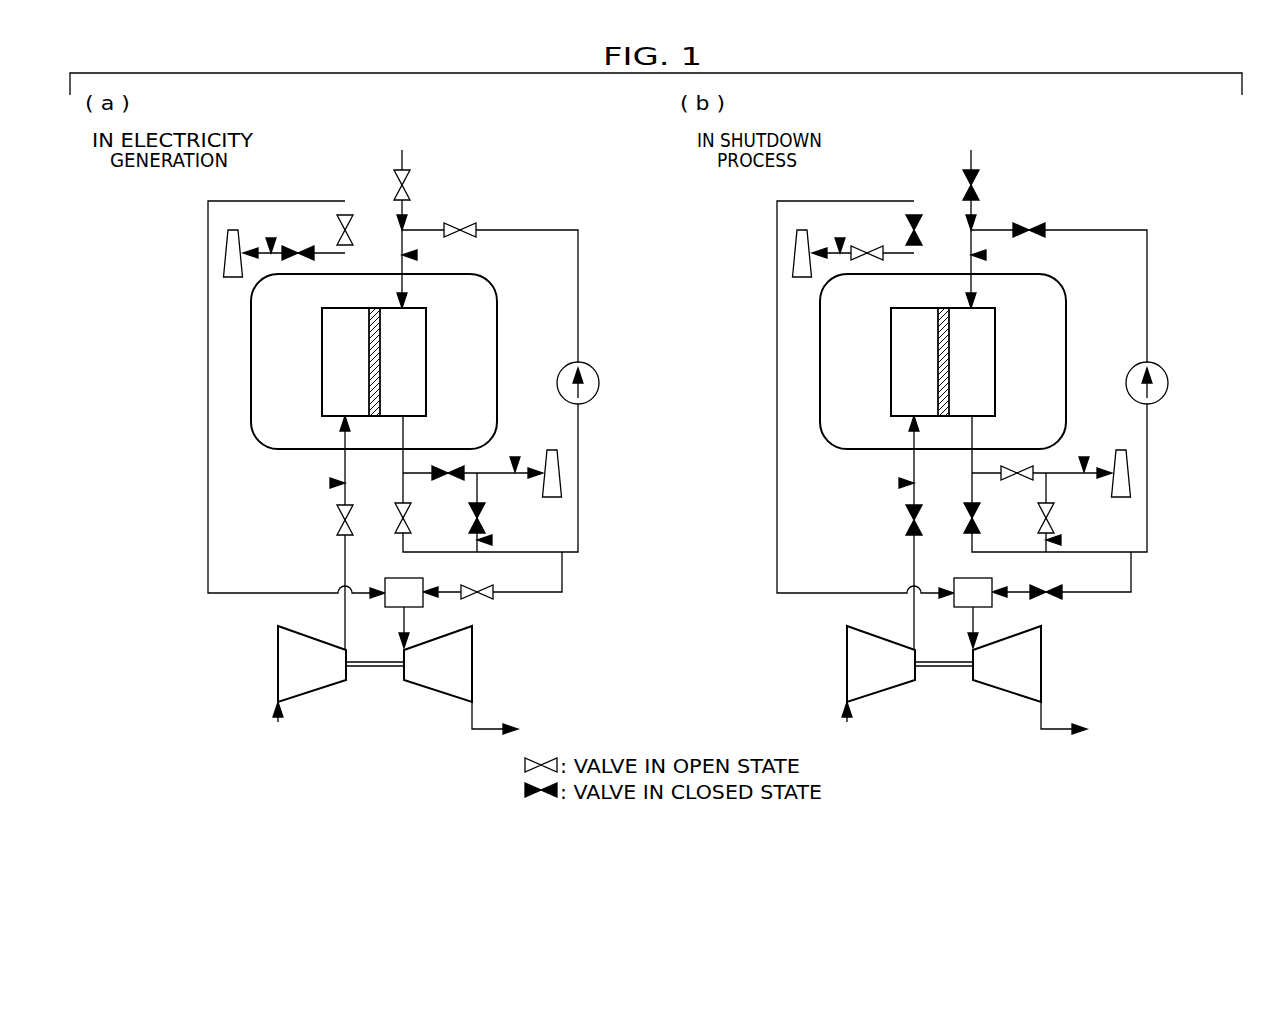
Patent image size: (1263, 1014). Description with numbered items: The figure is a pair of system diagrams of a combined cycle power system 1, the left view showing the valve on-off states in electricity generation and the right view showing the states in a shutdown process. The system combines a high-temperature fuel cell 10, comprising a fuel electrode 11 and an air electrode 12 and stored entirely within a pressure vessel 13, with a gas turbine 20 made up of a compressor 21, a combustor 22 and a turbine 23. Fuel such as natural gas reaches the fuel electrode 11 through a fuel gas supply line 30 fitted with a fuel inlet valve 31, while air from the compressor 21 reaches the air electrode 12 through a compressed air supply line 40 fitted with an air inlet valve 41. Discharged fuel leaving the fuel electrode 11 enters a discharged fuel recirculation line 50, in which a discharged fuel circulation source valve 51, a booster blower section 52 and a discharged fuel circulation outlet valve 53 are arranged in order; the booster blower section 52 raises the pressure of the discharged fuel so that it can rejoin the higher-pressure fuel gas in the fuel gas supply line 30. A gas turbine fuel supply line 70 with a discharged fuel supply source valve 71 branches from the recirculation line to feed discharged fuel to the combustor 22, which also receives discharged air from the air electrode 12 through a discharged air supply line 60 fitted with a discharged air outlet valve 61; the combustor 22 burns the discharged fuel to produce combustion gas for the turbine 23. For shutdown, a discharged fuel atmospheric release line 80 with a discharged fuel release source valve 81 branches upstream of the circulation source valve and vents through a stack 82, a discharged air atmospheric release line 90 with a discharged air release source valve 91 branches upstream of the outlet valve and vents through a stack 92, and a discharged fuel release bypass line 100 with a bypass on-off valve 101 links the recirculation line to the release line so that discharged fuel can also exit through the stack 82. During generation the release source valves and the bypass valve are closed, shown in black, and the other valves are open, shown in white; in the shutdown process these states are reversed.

The combined cycle power system 1 is at (605, 210).
The fuel cell 10 is at (441, 338).
The fuel electrode 11 is at (413, 366).
The air electrode 12 is at (338, 360).
The pressure vessel 13 is at (497, 315).
The gas turbine 20 is at (375, 705).
The compressor 21 is at (278, 664).
The combustor 22 is at (390, 577).
The turbine 23 is at (473, 664).
The fuel gas supply line 30 is at (418, 255).
The fuel inlet valve 31 is at (410, 180).
The compressed air supply line 40 is at (330, 483).
The air inlet valve 41 is at (337, 523).
The discharged fuel recirculation line 50 is at (594, 509).
The discharged fuel circulation source valve 51 is at (398, 512).
The booster blower section 52 is at (597, 398).
The discharged fuel circulation outlet valve 53 is at (460, 222).
The discharged air supply line 60 is at (195, 348).
The discharged air outlet valve 61 is at (345, 215).
The gas turbine fuel supply line 70 is at (578, 570).
The discharged fuel supply source valve 71 is at (492, 597).
The discharged fuel atmospheric release line 80 is at (515, 457).
The discharged fuel release source valve 81 is at (445, 480).
The stack 82 is at (562, 460).
The discharged air atmospheric release line 90 is at (271, 238).
The discharged air release source valve 91 is at (298, 246).
The stack 92 is at (224, 252).
The discharged fuel release bypass line 100 is at (493, 540).
The bypass on-off valve 101 is at (486, 514).